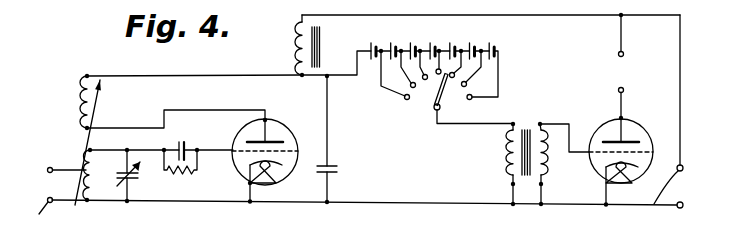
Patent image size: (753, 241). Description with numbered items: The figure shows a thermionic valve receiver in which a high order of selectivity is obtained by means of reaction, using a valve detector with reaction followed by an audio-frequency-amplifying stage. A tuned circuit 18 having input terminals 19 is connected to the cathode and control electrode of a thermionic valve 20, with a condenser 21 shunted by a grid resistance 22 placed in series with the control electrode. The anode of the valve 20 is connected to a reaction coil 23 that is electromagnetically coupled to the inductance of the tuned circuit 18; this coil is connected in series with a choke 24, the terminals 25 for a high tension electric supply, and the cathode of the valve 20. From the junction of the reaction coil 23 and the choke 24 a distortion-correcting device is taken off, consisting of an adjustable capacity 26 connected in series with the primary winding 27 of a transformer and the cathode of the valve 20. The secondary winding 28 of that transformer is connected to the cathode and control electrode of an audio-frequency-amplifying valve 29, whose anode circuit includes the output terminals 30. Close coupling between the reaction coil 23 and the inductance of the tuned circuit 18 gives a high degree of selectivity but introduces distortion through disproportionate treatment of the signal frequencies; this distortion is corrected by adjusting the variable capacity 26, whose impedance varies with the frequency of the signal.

The tuned circuit 18 is at (107, 189).
The input terminals 19 is at (58, 202).
The thermionic valve 20 is at (283, 131).
The condenser 21 is at (186, 147).
The grid resistance 22 is at (184, 172).
The reaction coil 23 is at (80, 108).
The choke 24 is at (295, 48).
The terminals 25 is at (677, 209).
The adjustable capacity 26 is at (475, 83).
The primary winding 27 is at (506, 159).
The secondary winding 28 is at (549, 160).
The audio-frequency-amplifying valve 29 is at (603, 128).
The output terminals 30 is at (624, 72).